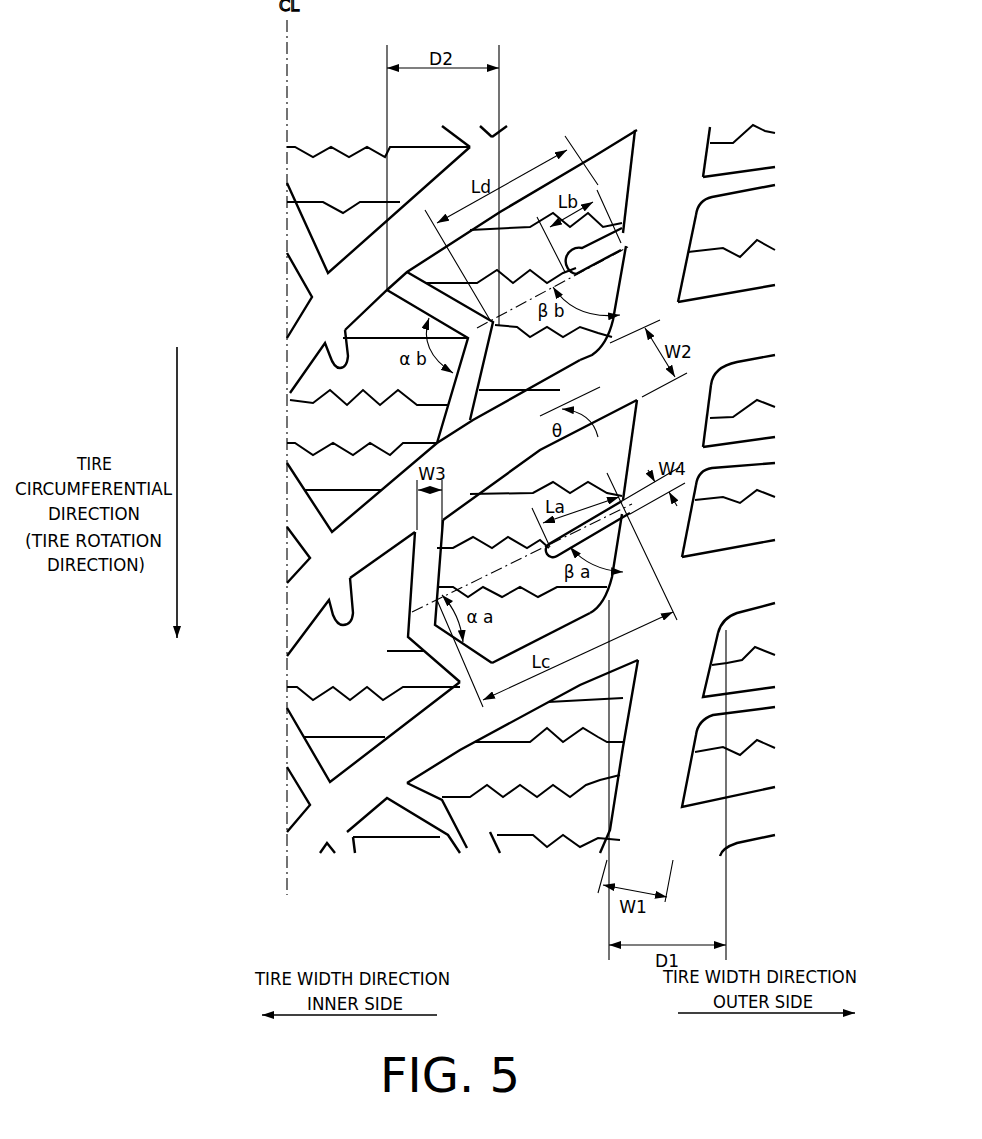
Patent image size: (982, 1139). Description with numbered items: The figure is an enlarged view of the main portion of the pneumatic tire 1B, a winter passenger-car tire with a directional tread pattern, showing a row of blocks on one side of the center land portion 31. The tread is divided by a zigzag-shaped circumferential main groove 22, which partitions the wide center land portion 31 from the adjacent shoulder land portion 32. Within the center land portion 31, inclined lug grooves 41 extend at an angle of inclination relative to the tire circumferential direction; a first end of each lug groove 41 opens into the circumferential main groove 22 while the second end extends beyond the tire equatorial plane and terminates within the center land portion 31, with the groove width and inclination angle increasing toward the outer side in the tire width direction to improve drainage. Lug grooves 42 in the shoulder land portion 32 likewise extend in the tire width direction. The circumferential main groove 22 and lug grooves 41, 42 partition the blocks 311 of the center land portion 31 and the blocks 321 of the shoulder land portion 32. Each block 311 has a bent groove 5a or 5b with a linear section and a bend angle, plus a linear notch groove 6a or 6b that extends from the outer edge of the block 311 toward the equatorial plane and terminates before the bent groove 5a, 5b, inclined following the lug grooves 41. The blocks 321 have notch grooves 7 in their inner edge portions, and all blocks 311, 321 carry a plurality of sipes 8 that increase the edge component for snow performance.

The pneumatic tire 1B is at (712, 62).
The circumferential main groove 22 is at (671, 145).
The center land portion 31 is at (538, 112).
The shoulder land portion 32 is at (778, 110).
The block 311 is at (300, 425).
The block 321 is at (762, 268).
The lug groove 41 is at (300, 184).
The lug groove 42 is at (762, 327).
The bent groove 5a is at (437, 537).
The bent groove 5b is at (443, 297).
The notch groove 6a is at (548, 550).
The notch groove 6b is at (570, 262).
The notch groove 7 is at (762, 180).
The sipe 8 is at (352, 202).